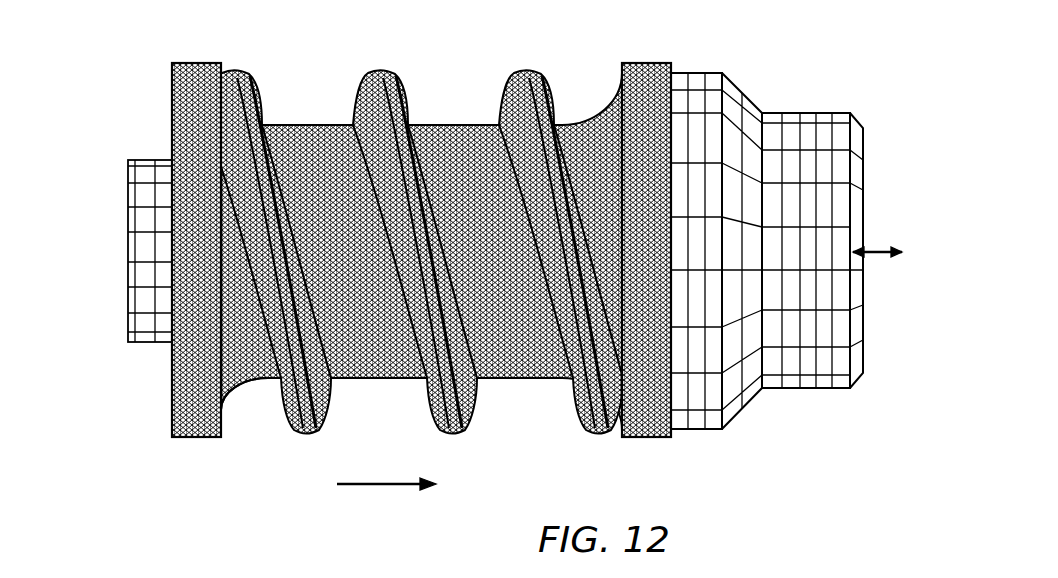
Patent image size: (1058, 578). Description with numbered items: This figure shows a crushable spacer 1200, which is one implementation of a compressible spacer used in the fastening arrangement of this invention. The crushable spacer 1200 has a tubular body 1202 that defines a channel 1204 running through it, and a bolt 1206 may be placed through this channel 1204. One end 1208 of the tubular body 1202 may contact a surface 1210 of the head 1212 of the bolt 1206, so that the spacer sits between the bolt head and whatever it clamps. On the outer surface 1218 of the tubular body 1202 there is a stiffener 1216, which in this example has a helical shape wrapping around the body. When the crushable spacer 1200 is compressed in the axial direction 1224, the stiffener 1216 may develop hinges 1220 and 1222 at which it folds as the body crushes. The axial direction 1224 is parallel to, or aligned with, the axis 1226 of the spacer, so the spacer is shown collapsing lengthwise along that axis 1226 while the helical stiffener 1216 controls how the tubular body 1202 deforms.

The crushable spacer 1200 is at (657, 118).
The tubular body 1202 is at (628, 442).
The channel 1204 is at (128, 320).
The bolt 1206 is at (788, 363).
The end 1208 is at (655, 395).
The surface 1210 is at (675, 410).
The head 1212 is at (822, 280).
The stiffener 1216 is at (385, 72).
The surface 1218 is at (258, 388).
The hinge 1220 is at (316, 125).
The hinge 1222 is at (460, 125).
The axial direction 1224 is at (378, 486).
The axis 1226 is at (892, 247).